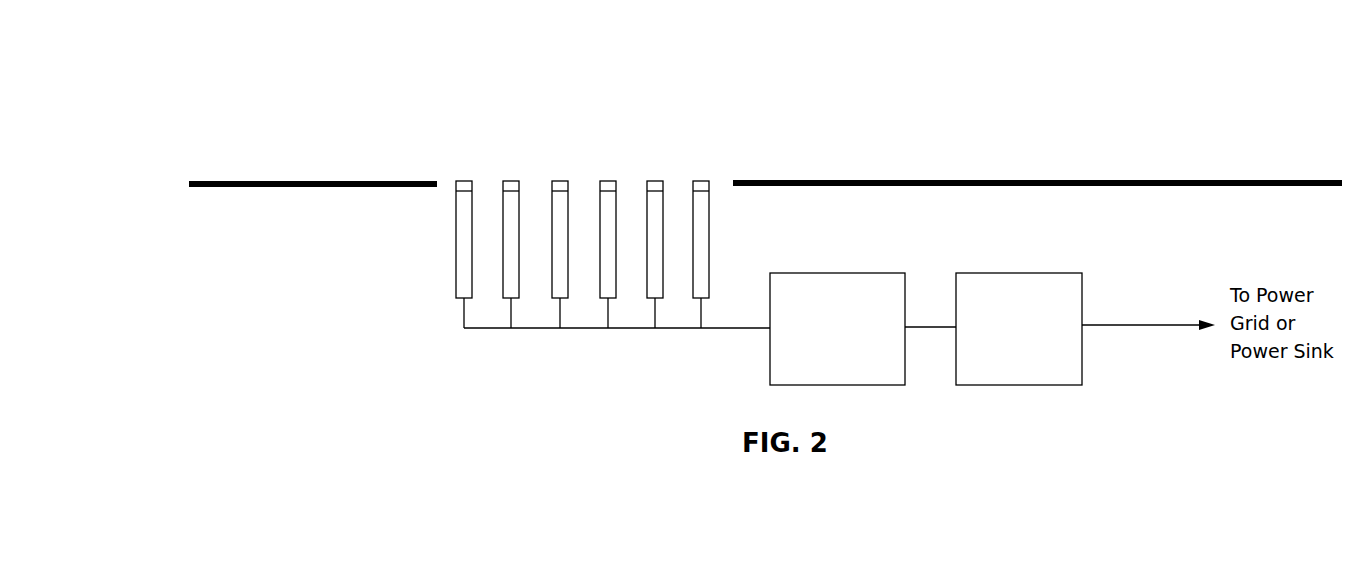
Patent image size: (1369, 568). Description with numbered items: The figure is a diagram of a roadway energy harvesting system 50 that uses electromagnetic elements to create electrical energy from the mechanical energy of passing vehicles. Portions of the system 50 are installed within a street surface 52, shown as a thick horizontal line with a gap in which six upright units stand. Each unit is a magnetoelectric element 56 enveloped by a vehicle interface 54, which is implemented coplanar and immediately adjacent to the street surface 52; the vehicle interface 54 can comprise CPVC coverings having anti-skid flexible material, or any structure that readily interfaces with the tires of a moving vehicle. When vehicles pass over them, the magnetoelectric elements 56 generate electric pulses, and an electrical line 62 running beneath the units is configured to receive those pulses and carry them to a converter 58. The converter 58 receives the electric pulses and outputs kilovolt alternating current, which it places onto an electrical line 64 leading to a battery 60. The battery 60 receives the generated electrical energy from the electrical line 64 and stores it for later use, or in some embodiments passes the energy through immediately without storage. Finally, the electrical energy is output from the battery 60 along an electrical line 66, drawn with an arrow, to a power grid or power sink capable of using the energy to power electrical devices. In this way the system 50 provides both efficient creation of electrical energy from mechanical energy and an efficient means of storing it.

The roadway energy harvesting system 50 is at (205, 108).
The street surface 52 is at (333, 184).
The vehicle interface 54 is at (465, 184).
The magnetoelectric element 56 is at (467, 237).
The converter 58 is at (837, 329).
The battery 60 is at (1019, 329).
The electrical line 62 is at (635, 330).
The electrical line 64 is at (937, 327).
The electrical line 66 is at (1168, 327).